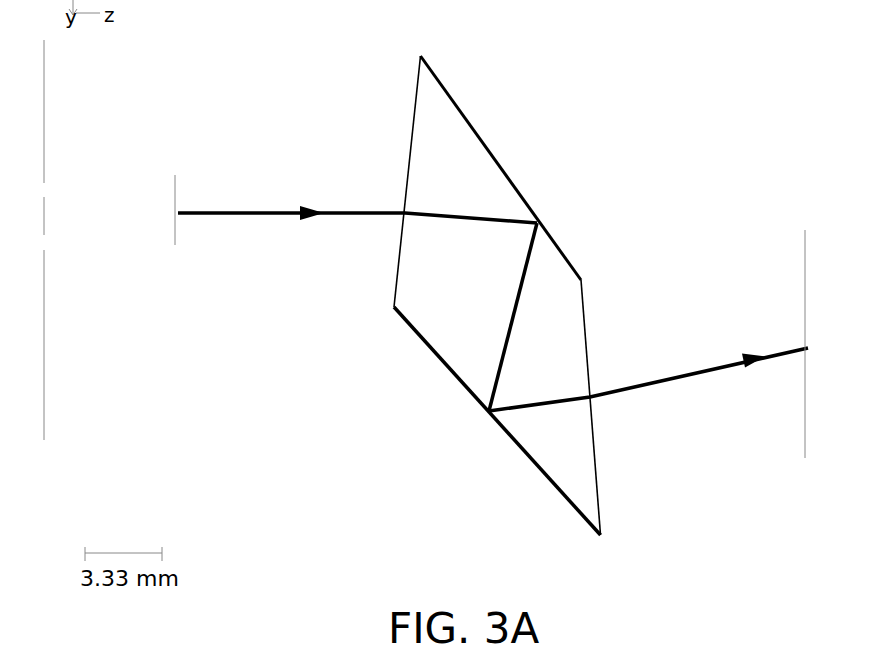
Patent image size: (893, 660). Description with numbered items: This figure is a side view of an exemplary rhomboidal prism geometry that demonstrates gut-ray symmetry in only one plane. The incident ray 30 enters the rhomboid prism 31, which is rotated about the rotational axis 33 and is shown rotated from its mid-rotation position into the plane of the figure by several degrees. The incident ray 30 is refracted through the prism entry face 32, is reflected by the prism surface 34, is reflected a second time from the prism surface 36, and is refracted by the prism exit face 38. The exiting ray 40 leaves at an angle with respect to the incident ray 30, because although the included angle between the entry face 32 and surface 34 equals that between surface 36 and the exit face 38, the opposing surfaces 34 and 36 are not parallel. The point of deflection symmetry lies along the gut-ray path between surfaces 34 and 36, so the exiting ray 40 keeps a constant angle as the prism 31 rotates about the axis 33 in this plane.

The incident ray 30 is at (288, 210).
The rhomboid prism 31 is at (513, 293).
The prism entry face 32 is at (410, 137).
The rotational axis 33 is at (44, 395).
The prism surface 34 is at (495, 155).
The prism surface 36 is at (543, 475).
The prism exit face 38 is at (598, 489).
The exiting ray 40 is at (690, 378).